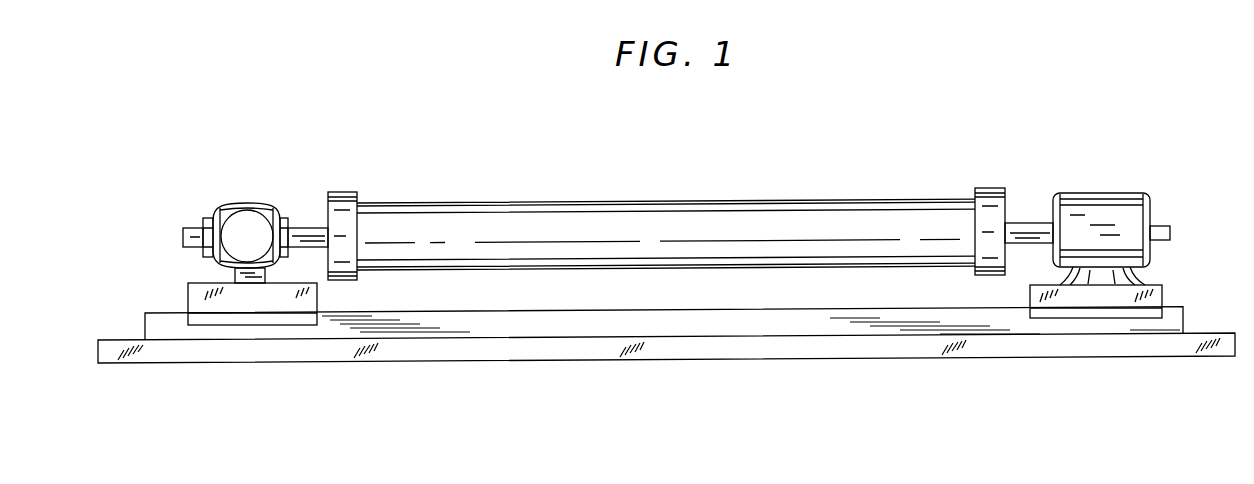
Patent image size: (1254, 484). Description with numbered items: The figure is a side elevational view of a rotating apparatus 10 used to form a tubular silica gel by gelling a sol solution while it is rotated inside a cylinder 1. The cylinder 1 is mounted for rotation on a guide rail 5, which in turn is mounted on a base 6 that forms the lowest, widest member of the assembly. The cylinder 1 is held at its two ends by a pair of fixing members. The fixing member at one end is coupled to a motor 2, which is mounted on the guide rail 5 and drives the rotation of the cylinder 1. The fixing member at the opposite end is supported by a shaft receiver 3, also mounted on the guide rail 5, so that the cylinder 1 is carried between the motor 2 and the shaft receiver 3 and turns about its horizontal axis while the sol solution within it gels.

The cylinder 1 is at (653, 184).
The motor 2 is at (1108, 195).
The shaft receiver 3 is at (250, 204).
The guide rail 5 is at (697, 330).
The base 6 is at (1093, 349).
The rotating apparatus 10 is at (1149, 171).